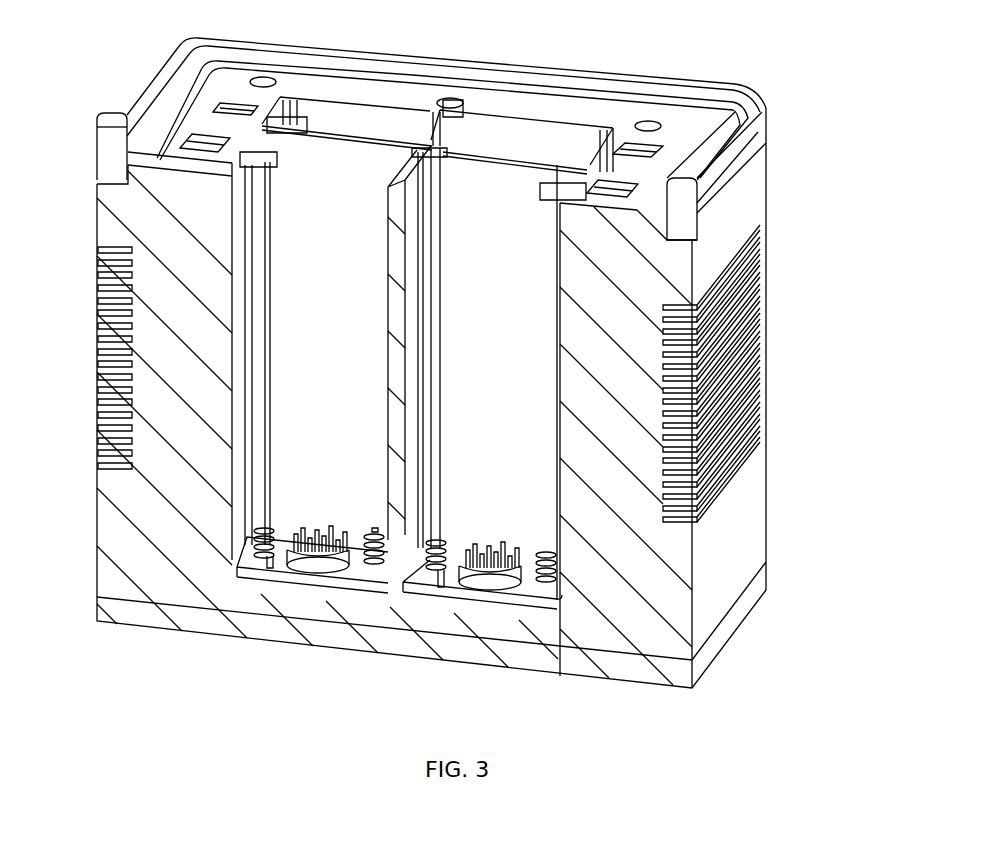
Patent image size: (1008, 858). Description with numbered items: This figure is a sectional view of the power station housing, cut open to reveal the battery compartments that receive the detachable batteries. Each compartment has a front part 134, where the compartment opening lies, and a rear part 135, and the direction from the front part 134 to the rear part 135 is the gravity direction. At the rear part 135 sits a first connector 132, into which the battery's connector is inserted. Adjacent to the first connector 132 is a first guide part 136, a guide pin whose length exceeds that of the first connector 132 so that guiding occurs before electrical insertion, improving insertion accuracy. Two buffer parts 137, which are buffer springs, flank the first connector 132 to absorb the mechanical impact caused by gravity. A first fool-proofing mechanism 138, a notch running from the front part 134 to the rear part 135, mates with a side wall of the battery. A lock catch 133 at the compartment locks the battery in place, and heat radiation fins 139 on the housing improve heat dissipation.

The first connector 132 is at (310, 565).
The lock catch 133 is at (600, 186).
The front part 134 is at (305, 151).
The rear part 135 is at (246, 563).
The first guide part 136 is at (267, 563).
The buffer part 137 is at (373, 565).
The first fool-proofing mechanism 138 is at (258, 265).
The heat radiation fin 139 is at (108, 357).